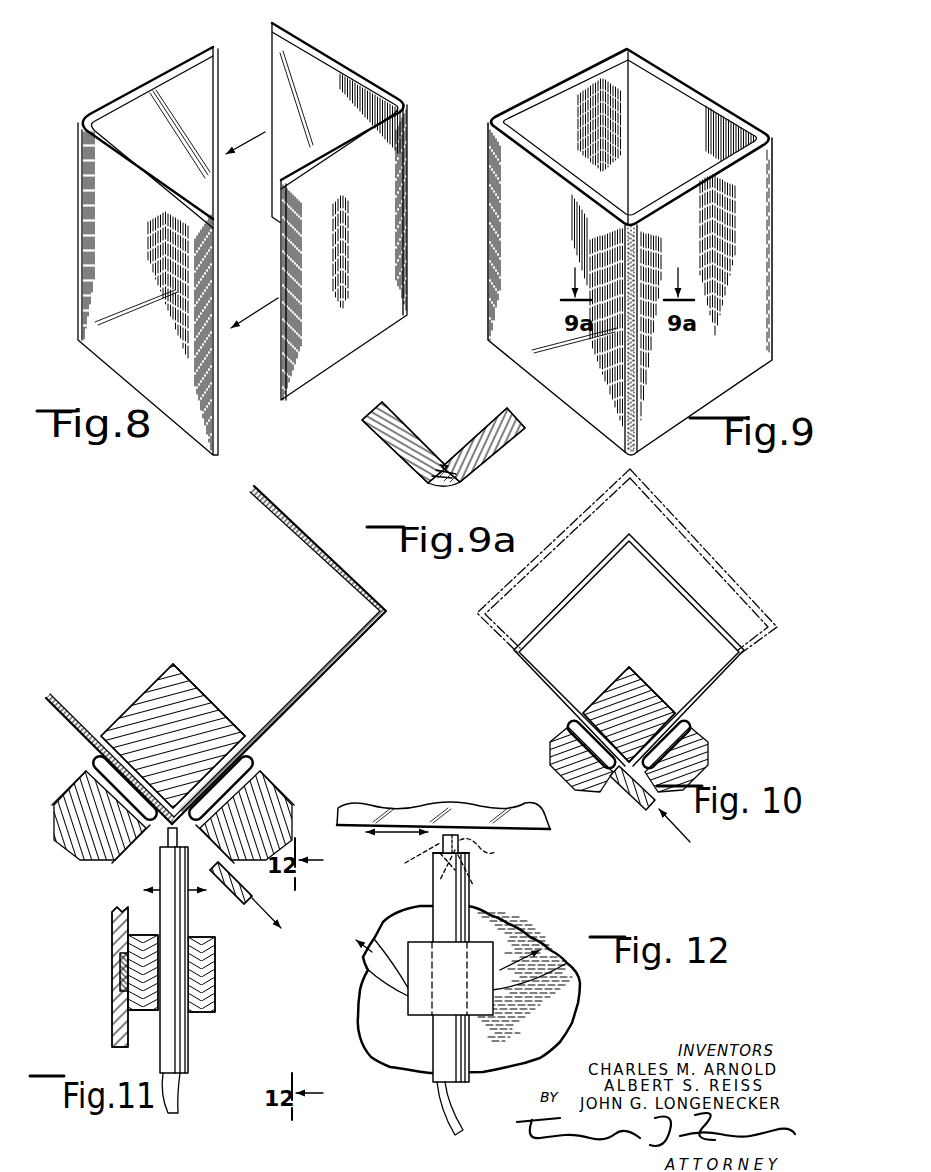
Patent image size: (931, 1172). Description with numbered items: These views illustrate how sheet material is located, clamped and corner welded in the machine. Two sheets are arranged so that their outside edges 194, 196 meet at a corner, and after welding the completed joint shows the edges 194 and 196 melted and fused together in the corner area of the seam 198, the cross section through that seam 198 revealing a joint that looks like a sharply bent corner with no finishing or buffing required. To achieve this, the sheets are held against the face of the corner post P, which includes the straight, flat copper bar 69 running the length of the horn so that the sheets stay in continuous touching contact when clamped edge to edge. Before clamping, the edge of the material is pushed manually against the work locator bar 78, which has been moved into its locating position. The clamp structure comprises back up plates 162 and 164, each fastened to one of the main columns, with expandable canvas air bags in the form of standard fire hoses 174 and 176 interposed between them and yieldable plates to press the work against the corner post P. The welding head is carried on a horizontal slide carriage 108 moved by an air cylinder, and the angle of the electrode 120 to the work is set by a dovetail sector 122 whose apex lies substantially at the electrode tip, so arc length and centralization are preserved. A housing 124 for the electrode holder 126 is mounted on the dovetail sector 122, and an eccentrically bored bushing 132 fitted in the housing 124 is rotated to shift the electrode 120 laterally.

In FIG. 8, the outside edge 194 is at (208, 451).
In FIG. 9, the outside edge 194 is at (625, 404).
In FIG. 9A, the outside edge 194 is at (430, 481).
In FIG. 8, the outside edge 196 is at (283, 394).
In FIG. 9, the outside edge 196 is at (637, 398).
In FIG. 9A, the outside edge 196 is at (468, 480).
In FIG. 9, the seam 198 is at (637, 437).
In FIG. 9A, the seam 198 is at (447, 463).
In FIG. 10, the copper bar 69 is at (604, 697).
In FIG. 11, the copper bar 69 is at (147, 708).
In FIG. 10, the corner post P is at (652, 681).
In FIG. 11, the corner post P is at (218, 701).
In FIG. 12, the corner post P is at (407, 804).
In FIG. 10, the expandable air bag 174 is at (567, 731).
In FIG. 11, the expandable air bag 174 is at (92, 761).
In FIG. 10, the expandable air bag 176 is at (686, 731).
In FIG. 11, the expandable air bag 176 is at (256, 763).
In FIG. 10, the back up plate 162 is at (571, 757).
In FIG. 11, the back up plate 162 is at (86, 809).
In FIG. 10, the back up plate 164 is at (686, 751).
In FIG. 11, the back up plate 164 is at (266, 795).
In FIG. 10, the work locator bar 78 is at (641, 798).
In FIG. 11, the work locator bar 78 is at (231, 897).
In FIG. 11, the electrode 120 is at (168, 834).
In FIG. 12, the electrode 120 is at (458, 840).
In FIG. 11, the horizontal slide carriage 108 is at (112, 936).
In FIG. 12, the horizontal slide carriage 108 is at (565, 993).
In FIG. 11, the dovetail sector 122 is at (124, 976).
In FIG. 12, the dovetail sector 122 is at (496, 979).
In FIG. 11, the housing 124 is at (215, 978).
In FIG. 12, the housing 124 is at (495, 1013).
In FIG. 11, the electrode holder 126 is at (188, 1046).
In FIG. 12, the electrode holder 126 is at (475, 895).
In FIG. 11, the bushing 132 is at (150, 1012).